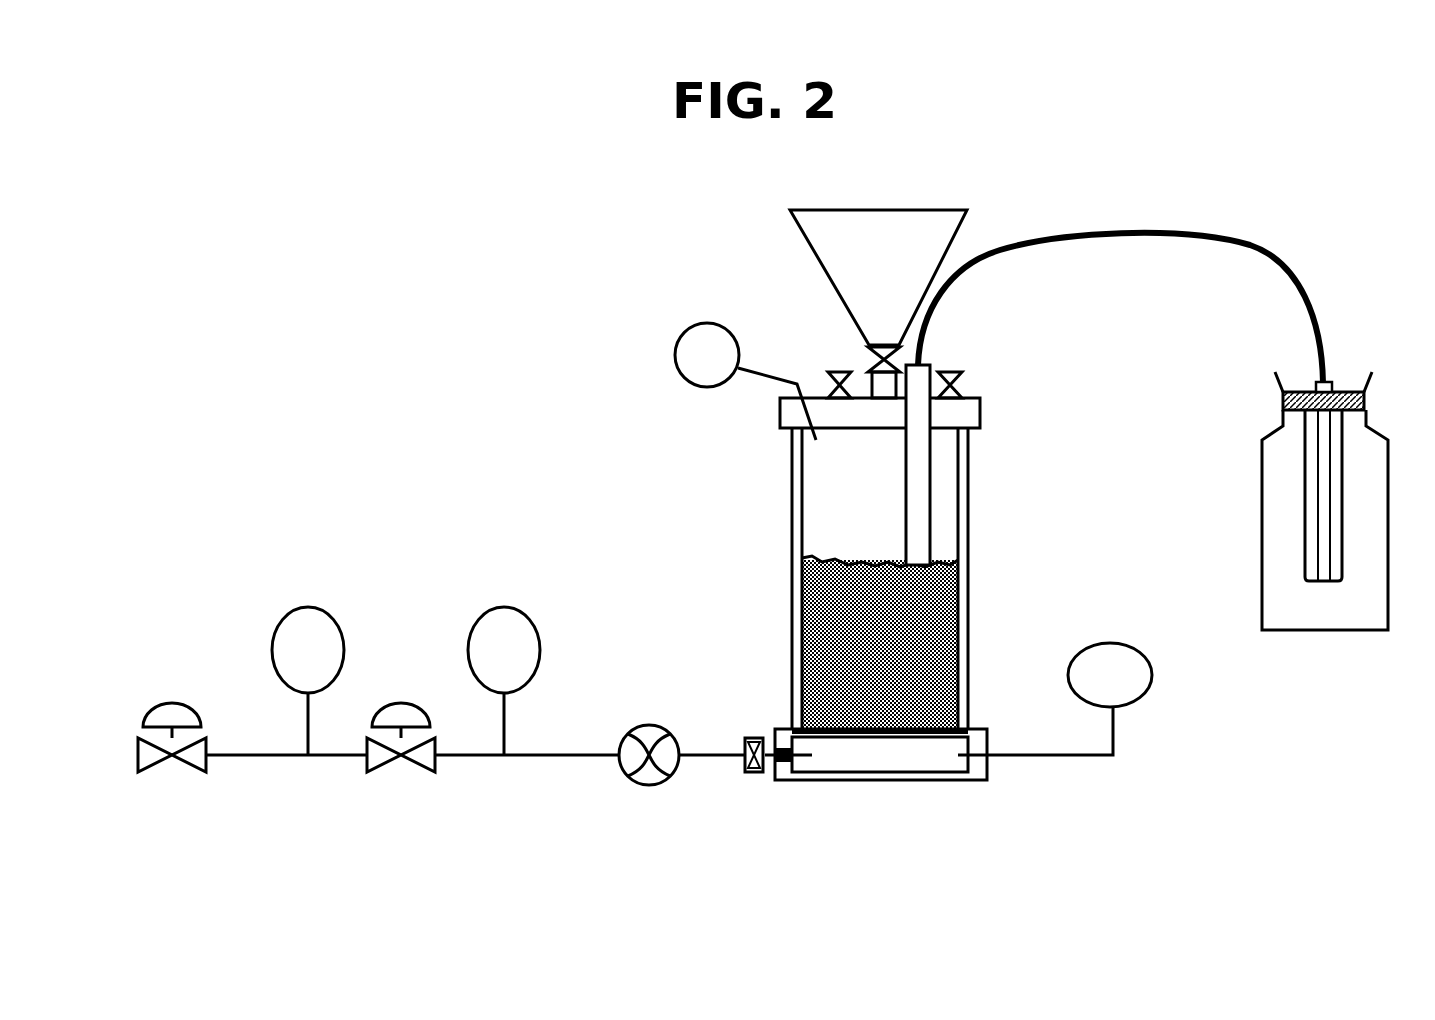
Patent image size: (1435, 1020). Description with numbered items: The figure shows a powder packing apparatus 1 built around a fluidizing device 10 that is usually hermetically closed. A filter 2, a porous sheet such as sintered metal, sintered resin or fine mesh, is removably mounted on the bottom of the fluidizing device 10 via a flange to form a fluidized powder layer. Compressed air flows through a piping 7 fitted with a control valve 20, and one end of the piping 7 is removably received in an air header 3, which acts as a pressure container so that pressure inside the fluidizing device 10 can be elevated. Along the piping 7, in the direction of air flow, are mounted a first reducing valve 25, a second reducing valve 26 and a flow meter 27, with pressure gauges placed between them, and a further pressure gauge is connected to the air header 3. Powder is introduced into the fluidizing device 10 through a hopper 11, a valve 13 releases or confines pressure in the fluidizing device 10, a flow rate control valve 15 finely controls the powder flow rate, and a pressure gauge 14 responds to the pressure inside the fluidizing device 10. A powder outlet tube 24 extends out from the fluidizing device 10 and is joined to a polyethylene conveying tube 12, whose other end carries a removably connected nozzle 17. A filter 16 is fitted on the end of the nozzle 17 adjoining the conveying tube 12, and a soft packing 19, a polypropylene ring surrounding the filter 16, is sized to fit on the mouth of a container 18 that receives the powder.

The powder packing apparatus 1 is at (597, 380).
The filter 2 is at (850, 745).
The air header 3 is at (920, 778).
The piping 7 is at (270, 758).
The fluidizing device 10 is at (793, 518).
The hopper 11 is at (915, 222).
The conveying tube 12 is at (1180, 232).
The valve 13 is at (805, 352).
The pressure gauge 14 is at (690, 383).
The flow rate control valve 15 is at (963, 366).
The filter 16 is at (1330, 393).
The nozzle 17 is at (1344, 518).
The container 18 is at (1293, 612).
The soft packing 19 is at (1283, 397).
The control valve 20 is at (752, 773).
The powder outlet tube 24 is at (930, 482).
The first reducing valve 25 is at (172, 782).
The second reducing valve 26 is at (395, 793).
The flow meter 27 is at (648, 785).